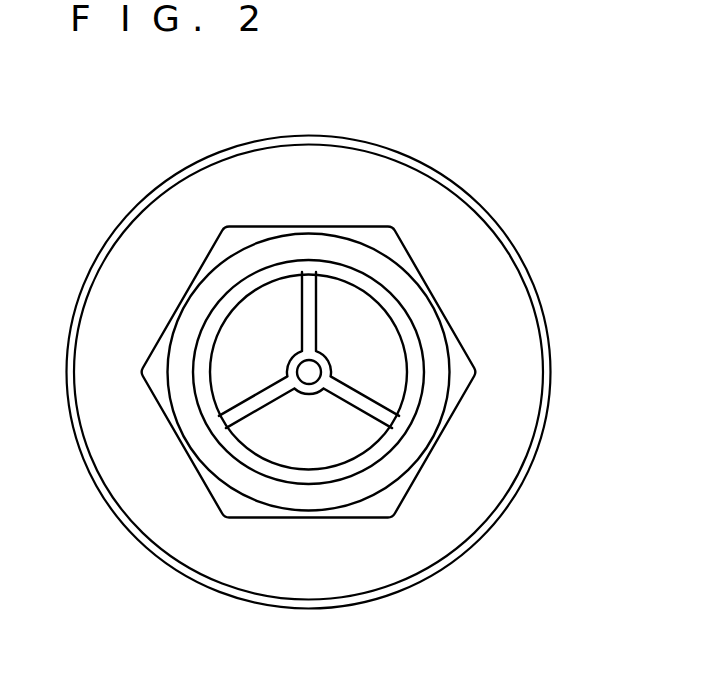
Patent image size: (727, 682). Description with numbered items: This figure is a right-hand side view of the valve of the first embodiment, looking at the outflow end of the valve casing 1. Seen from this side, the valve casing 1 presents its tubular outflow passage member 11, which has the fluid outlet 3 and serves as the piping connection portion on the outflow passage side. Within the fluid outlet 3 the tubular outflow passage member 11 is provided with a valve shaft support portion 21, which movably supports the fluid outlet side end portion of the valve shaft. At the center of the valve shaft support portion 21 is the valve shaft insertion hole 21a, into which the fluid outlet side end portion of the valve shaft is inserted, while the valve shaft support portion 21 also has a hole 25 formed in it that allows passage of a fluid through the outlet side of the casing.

The valve casing 1 is at (398, 142).
The tubular outflow passage member 11 is at (461, 224).
The fluid outlet 3 is at (350, 337).
The hole 25 is at (387, 379).
The valve shaft support portion 21 is at (248, 408).
The valve shaft insertion hole 21a is at (311, 380).